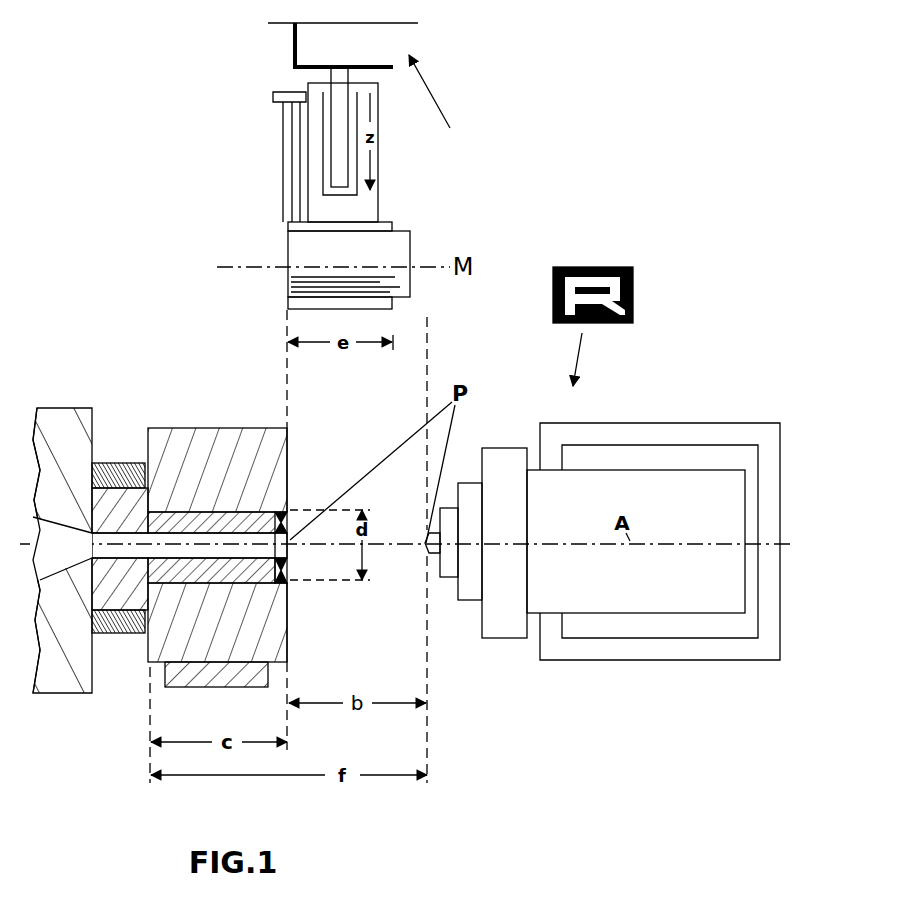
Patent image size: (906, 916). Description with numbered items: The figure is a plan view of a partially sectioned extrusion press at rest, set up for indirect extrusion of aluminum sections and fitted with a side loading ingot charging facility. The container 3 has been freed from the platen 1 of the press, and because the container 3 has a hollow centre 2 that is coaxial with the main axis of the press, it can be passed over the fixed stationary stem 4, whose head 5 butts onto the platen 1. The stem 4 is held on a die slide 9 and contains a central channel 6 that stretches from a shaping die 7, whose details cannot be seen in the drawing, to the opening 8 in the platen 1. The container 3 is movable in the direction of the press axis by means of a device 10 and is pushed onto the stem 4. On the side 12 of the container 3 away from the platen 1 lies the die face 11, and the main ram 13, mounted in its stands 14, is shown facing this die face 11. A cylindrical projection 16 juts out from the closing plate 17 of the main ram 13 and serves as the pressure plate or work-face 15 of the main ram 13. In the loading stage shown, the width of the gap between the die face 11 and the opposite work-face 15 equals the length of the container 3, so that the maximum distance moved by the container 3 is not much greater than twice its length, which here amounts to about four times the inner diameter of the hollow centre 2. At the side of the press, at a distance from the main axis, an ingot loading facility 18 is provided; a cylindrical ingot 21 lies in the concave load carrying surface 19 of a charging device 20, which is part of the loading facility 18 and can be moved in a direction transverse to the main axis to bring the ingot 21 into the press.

The platen 1 is at (53, 423).
The hollow centre 2 is at (227, 513).
The container 3 is at (213, 440).
The stem 4 is at (133, 633).
The head 5 is at (117, 462).
The central channel 6 is at (282, 577).
The shaping die 7 is at (288, 517).
The opening 8 is at (62, 548).
The die slide 9 is at (98, 636).
The device 10 is at (207, 684).
The die face 11 is at (289, 565).
The side 12 is at (288, 633).
The main ram 13 is at (708, 511).
The stands 14 is at (692, 435).
The work-face 15 is at (437, 548).
The cylindrical projection 16 is at (435, 555).
The closing plate 17 is at (456, 577).
The ingot loading facility 18 is at (381, 152).
The concave load carrying surface 19 is at (288, 255).
The charging device 20 is at (373, 203).
The cylindrical ingot 21 is at (395, 261).